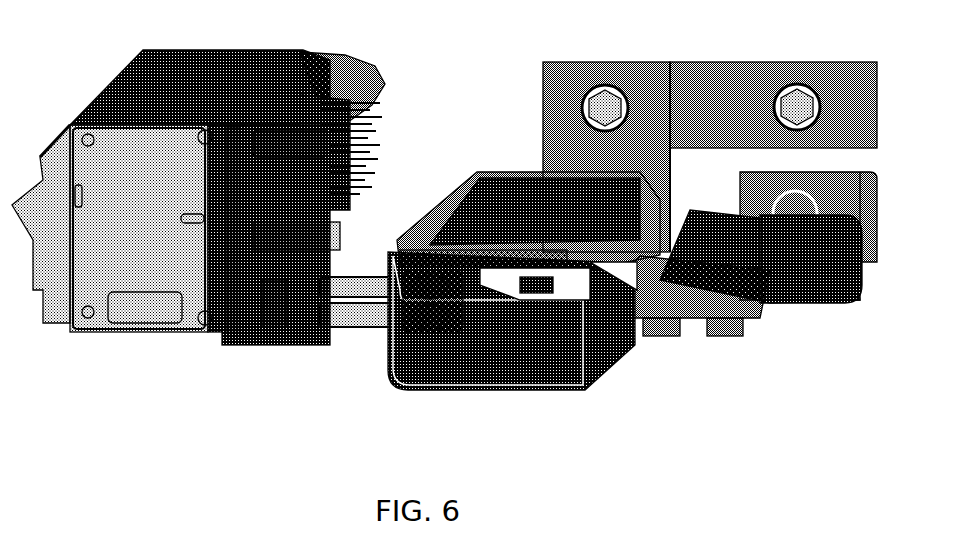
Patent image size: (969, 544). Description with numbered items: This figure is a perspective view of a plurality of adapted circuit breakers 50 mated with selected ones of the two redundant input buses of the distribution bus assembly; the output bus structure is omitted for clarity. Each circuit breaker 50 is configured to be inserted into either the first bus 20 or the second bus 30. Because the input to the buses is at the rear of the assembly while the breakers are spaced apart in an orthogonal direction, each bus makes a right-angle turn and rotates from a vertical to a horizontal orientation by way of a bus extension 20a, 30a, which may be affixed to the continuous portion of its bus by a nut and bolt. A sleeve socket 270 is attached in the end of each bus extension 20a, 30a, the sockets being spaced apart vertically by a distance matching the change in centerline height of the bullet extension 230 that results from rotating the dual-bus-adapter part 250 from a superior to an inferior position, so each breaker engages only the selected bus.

The first bus 20 is at (733, 80).
The bus extension 20a is at (497, 170).
The second bus 30 is at (868, 194).
The bus extension 30a is at (507, 383).
The circuit breaker 50 is at (135, 256).
The bullet extension 230 is at (362, 70).
The dual-bus-adapter part 250 is at (273, 340).
The sleeve socket 270 is at (362, 328).